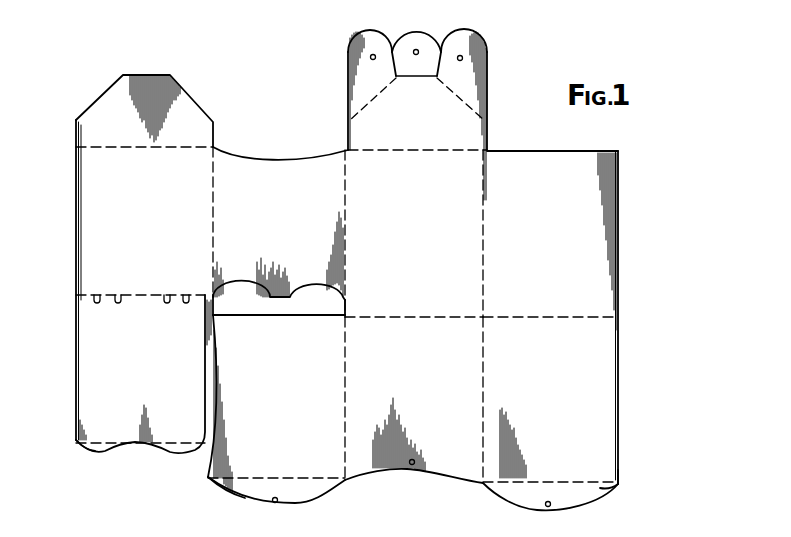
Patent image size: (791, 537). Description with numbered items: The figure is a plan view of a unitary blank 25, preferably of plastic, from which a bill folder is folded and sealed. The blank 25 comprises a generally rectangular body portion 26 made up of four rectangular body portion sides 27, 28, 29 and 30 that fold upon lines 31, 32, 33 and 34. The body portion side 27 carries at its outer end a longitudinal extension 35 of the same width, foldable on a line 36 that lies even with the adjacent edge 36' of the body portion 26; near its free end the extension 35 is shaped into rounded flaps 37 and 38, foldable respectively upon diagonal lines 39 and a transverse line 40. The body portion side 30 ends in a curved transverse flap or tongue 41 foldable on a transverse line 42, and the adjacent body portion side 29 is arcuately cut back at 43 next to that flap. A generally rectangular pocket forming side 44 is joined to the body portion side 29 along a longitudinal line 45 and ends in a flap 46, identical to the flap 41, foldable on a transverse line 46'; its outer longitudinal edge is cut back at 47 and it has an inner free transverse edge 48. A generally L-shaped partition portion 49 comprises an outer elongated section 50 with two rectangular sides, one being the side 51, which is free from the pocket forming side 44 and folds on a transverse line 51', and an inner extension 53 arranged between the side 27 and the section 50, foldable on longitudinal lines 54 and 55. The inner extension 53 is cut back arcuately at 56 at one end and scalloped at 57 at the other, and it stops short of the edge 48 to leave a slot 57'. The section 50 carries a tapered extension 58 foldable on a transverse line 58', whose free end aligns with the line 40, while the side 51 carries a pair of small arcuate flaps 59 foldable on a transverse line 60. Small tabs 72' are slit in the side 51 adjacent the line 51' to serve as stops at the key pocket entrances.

The unitary blank 25 is at (622, 188).
The body portion 26 is at (602, 300).
The body portion side 27 is at (426, 246).
The body portion side 28 is at (559, 249).
The body portion side 29 is at (426, 395).
The body portion side 30 is at (557, 406).
The fold line 31 is at (430, 303).
The fold line 32 is at (486, 300).
The fold line 33 is at (530, 319).
The fold line 34 is at (486, 372).
The longitudinal extension 35 is at (466, 136).
The fold line 36 is at (417, 166).
The edge of body portion 36' is at (552, 139).
The rounded flaps 37 is at (352, 51).
The rounded flap 38 is at (430, 45).
The diagonal fold lines 39 is at (372, 84).
The transverse fold line 40 is at (428, 78).
The curved transverse flap 41 is at (585, 493).
The transverse fold line 42 is at (596, 484).
The arcuate recess 43 is at (432, 471).
The pocket forming side 44 is at (287, 389).
The longitudinal fold line 45 is at (348, 386).
The flap 46 is at (276, 501).
The transverse fold line 46' is at (228, 500).
The cut back edge 47 is at (218, 421).
The inner free transverse edge 48 is at (258, 317).
The L-shaped partition portion 49 is at (70, 238).
The outer elongated section 50 is at (151, 230).
The side 51 is at (140, 370).
The transverse fold line 51' is at (140, 282).
The inner extension 53 is at (284, 227).
The longitudinal fold line 54 is at (347, 228).
The longitudinal fold line 55 is at (214, 210).
The arcuate cut back 56 is at (303, 158).
The scalloped end 57 is at (279, 276).
The slot 57' is at (297, 299).
The tapered extension 58 is at (144, 106).
The transverse fold line 58' is at (144, 162).
The arcuate flaps 59 is at (160, 448).
The transverse fold line 60 is at (90, 448).
The tabs 72' is at (141, 301).